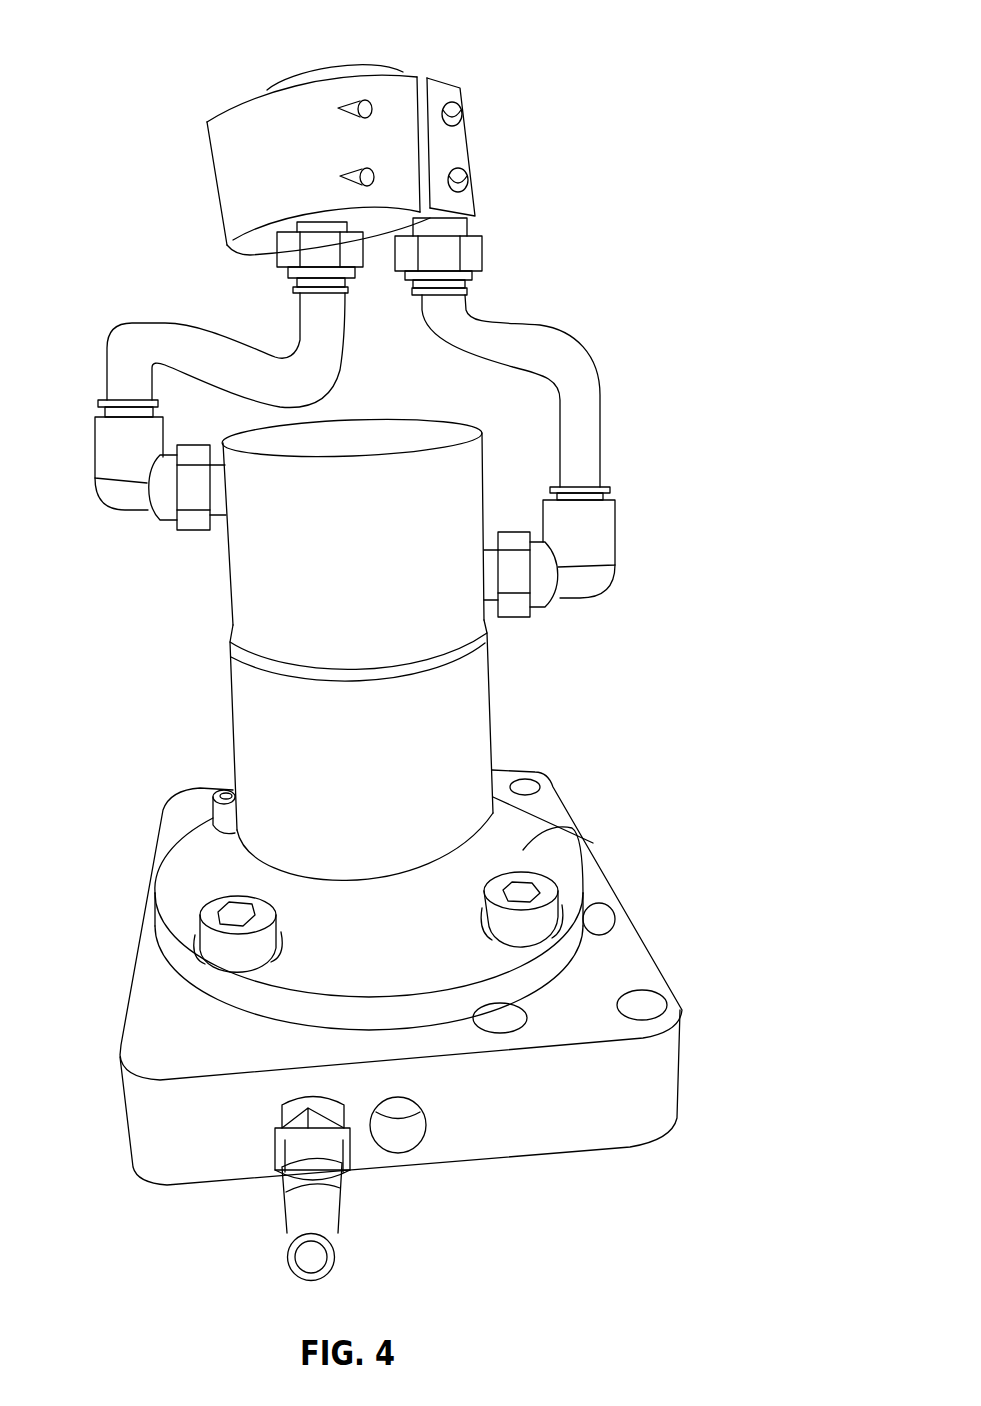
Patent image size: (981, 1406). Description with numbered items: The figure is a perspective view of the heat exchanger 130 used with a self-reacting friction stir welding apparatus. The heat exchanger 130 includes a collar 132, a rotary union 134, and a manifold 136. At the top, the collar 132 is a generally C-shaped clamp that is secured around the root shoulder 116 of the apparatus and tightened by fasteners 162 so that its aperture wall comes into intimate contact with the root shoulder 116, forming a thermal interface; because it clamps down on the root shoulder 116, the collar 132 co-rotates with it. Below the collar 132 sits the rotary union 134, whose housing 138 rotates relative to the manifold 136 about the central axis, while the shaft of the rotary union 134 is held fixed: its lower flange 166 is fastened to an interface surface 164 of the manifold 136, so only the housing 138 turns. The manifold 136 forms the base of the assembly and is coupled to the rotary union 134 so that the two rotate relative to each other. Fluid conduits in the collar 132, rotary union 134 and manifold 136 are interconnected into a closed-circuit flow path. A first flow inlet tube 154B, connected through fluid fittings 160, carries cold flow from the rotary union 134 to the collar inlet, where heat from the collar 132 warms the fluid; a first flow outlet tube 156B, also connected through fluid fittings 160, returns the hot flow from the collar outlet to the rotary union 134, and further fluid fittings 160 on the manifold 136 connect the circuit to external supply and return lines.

The heat exchanger 130 is at (606, 62).
The root shoulder 116 is at (313, 67).
The collar 132 is at (485, 148).
The fasteners 162 is at (455, 110).
The fluid fittings 160 is at (473, 247).
The first flow inlet tube 154B is at (137, 340).
The first flow outlet tube 156B is at (572, 363).
The rotary union 134 is at (503, 705).
The housing 138 is at (475, 760).
The lower flange 166 is at (593, 843).
The interface surface 164 is at (630, 972).
The manifold 136 is at (690, 1063).